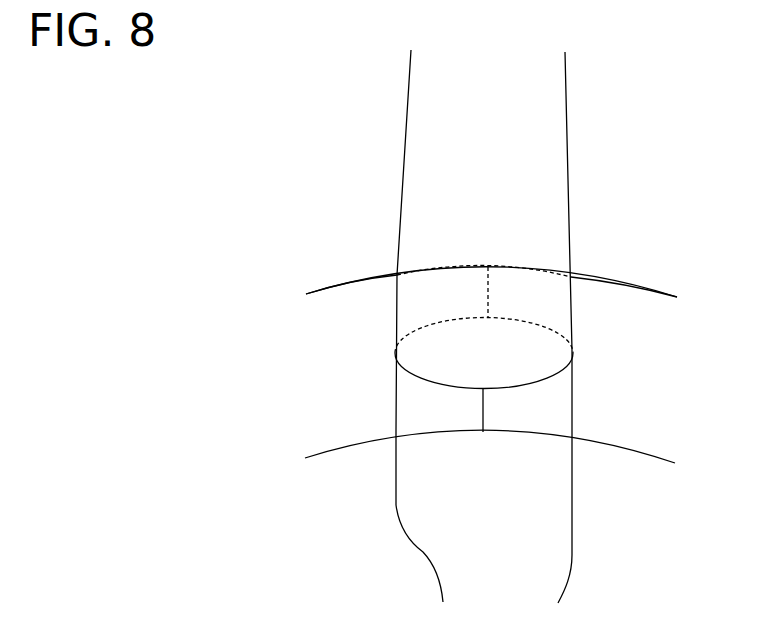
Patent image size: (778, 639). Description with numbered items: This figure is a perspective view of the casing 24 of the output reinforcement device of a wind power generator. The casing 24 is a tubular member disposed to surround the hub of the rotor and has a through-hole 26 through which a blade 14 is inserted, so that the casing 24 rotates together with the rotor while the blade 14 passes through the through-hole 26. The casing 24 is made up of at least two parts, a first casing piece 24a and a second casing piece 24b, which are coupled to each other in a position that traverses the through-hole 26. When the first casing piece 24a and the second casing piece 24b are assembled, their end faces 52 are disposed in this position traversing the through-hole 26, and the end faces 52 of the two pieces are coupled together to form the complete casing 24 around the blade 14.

The blade 14 is at (565, 110).
The casing 24 is at (338, 279).
The first casing piece 24a is at (372, 274).
The second casing piece 24b is at (595, 277).
The through-hole 26 is at (410, 366).
The end faces 52 is at (483, 406).